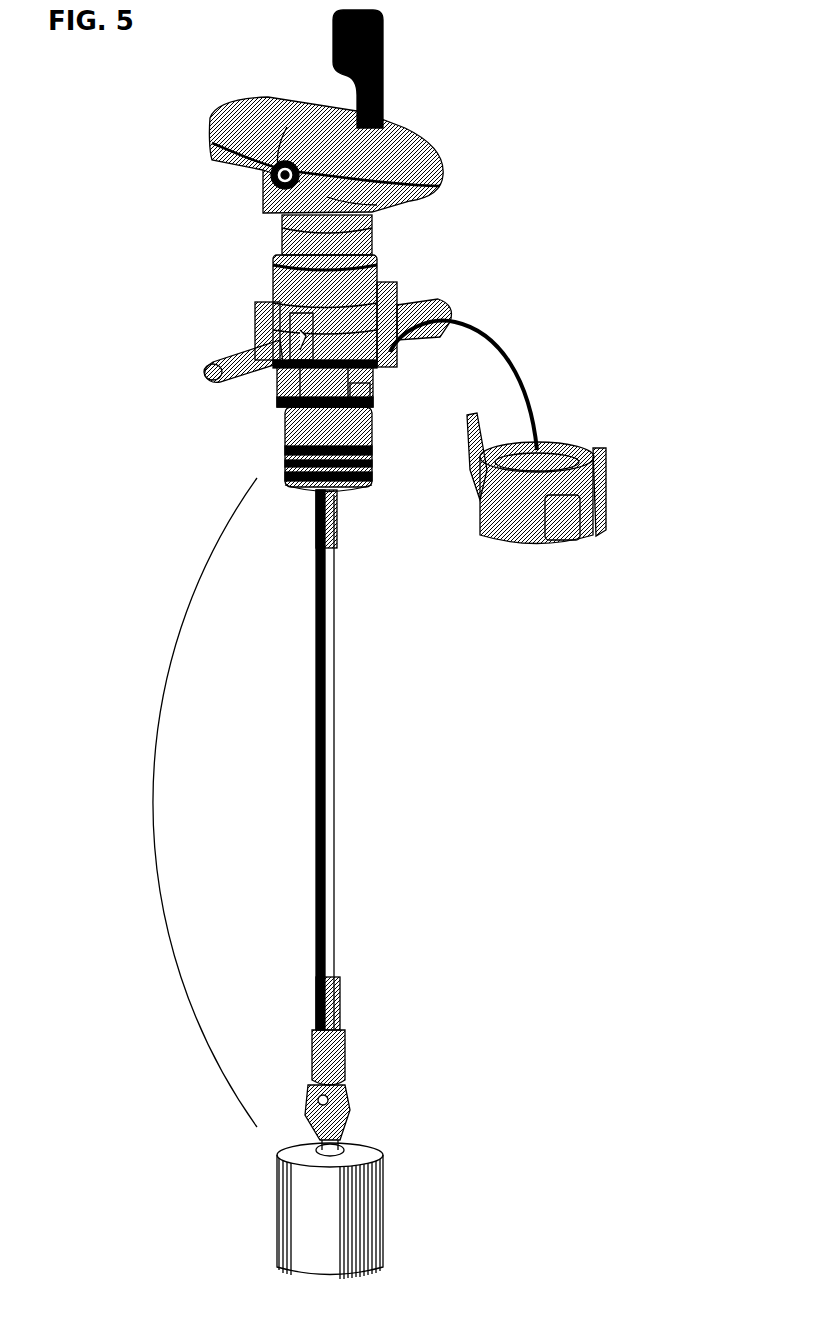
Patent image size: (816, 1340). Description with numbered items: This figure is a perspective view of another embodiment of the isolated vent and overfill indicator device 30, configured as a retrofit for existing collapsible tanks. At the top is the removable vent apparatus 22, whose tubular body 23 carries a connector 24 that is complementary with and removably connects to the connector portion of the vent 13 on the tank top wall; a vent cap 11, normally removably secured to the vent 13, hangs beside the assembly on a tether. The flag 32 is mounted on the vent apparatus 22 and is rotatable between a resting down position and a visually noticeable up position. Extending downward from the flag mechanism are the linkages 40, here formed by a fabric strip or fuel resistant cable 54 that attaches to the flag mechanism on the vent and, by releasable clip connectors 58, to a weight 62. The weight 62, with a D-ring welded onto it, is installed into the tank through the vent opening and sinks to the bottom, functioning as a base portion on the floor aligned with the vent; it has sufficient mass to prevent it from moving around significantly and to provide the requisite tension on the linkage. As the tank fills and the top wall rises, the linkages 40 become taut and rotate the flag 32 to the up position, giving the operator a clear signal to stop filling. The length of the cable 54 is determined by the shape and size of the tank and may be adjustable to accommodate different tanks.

The vent cap 11 is at (577, 450).
The vent 13 is at (372, 492).
The vent apparatus 22 is at (435, 160).
The tubular body 23 is at (353, 348).
The connector 24 is at (305, 335).
The overflow indicator device 30 is at (306, 111).
The flag 32 is at (383, 50).
The linkages 40 is at (179, 802).
The cable 54 is at (338, 835).
The releasable clip connectors 58 is at (345, 1100).
The weight 62 is at (370, 1218).